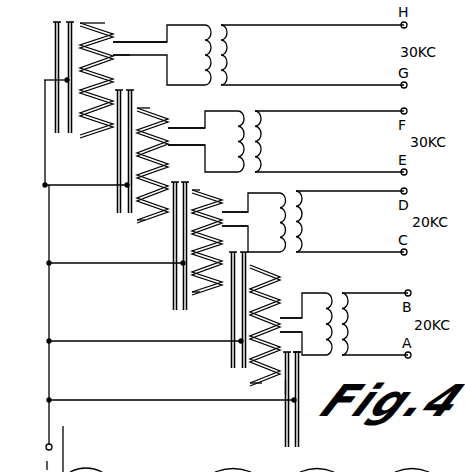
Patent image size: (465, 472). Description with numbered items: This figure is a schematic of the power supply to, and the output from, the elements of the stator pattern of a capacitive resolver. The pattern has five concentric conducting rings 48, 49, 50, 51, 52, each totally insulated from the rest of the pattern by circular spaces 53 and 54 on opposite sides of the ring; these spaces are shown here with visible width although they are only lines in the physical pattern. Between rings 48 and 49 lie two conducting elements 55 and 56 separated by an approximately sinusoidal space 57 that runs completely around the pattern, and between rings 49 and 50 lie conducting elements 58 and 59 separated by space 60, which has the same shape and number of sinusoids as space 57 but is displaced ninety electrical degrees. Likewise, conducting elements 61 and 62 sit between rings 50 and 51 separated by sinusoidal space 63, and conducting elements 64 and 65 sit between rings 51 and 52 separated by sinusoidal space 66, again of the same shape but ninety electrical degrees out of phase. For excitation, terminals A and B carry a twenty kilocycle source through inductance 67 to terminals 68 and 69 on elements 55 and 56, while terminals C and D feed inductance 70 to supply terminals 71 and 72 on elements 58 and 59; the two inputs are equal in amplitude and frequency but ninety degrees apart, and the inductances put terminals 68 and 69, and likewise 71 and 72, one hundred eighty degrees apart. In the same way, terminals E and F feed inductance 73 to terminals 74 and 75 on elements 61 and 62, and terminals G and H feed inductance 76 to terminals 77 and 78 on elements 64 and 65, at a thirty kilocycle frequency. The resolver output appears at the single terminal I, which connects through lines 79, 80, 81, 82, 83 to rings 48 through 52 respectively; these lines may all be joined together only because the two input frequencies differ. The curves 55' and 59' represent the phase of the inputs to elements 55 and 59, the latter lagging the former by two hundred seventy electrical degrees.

The conducting ring 48 is at (300, 445).
The conducting ring 49 is at (240, 375).
The conducting ring 50 is at (177, 305).
The conducting ring 51 is at (127, 216).
The conducting ring 52 is at (65, 134).
The circular space 53 is at (73, 136).
The circular space 54 is at (60, 120).
The conducting element 55 is at (310, 364).
The conducting element 56 is at (292, 386).
The space 57 is at (274, 348).
The conducting element 58 is at (240, 282).
The conducting element 59 is at (212, 296).
The space 60 is at (222, 248).
The conducting element 61 is at (196, 187).
The conducting element 62 is at (166, 166).
The sinusoidal space 63 is at (151, 222).
The conducting element 64 is at (144, 116).
The conducting element 65 is at (124, 98).
The sinusoidal space 66 is at (108, 86).
The inductance 67 is at (322, 334).
The terminal 68 is at (284, 315).
The terminal 69 is at (272, 315).
The inductance 70 is at (270, 231).
The terminal 71 is at (242, 203).
The terminal 72 is at (215, 205).
The inductance 73 is at (230, 157).
The terminal 74 is at (172, 128).
The terminal 75 is at (160, 127).
The inductance 76 is at (188, 58).
The terminal 77 is at (118, 42).
The terminal 78 is at (97, 27).
The line 79 is at (136, 405).
The line 80 is at (122, 345).
The line 81 is at (90, 265).
The line 82 is at (68, 188).
The line 83 is at (50, 80).
The curve 55' is at (170, 457).
The curve 59' is at (105, 458).